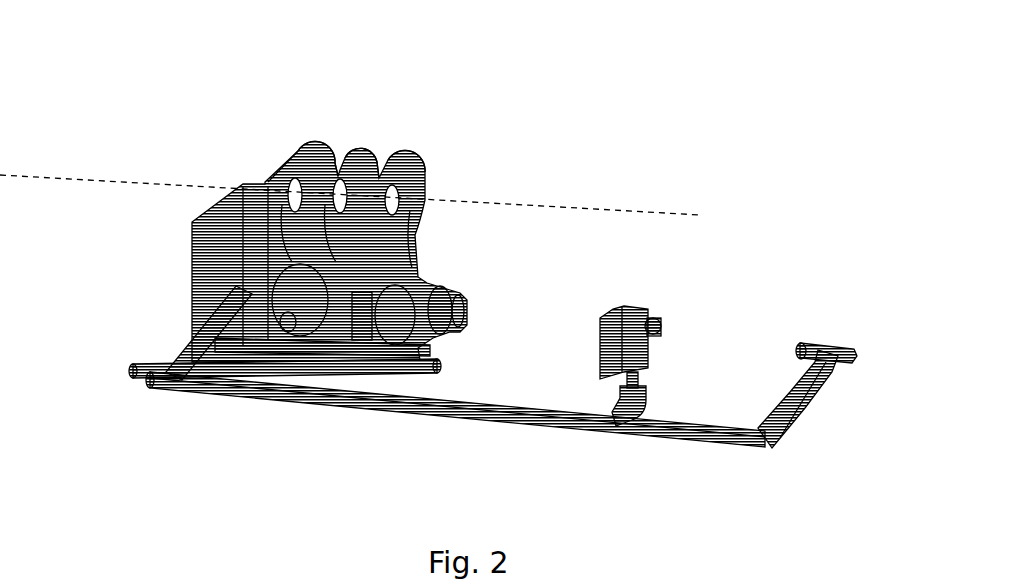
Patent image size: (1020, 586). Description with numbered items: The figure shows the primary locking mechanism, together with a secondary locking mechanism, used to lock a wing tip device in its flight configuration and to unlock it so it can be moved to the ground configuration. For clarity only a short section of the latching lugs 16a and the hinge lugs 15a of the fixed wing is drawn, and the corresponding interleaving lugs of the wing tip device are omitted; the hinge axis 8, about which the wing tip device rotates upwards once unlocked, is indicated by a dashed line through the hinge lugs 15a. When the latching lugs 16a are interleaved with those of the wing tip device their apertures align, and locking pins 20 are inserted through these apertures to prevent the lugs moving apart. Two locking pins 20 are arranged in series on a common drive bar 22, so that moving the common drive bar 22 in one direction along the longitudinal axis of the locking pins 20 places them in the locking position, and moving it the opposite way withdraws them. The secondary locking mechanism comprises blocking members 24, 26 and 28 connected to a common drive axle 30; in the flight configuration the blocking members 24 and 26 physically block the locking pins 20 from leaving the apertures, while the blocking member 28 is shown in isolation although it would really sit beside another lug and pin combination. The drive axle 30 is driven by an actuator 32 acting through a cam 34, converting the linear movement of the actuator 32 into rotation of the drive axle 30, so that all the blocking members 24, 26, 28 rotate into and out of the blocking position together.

The hinge axis 8 is at (160, 183).
The hinge lugs 15a is at (277, 182).
The latching lugs 16a is at (313, 273).
The locking pins 20 is at (462, 293).
The common drive bar 22 is at (322, 350).
The blocking member 24 is at (168, 382).
The blocking member 26 is at (365, 300).
The blocking member 28 is at (832, 348).
The common drive axle 30 is at (530, 417).
The actuator 32 is at (638, 310).
The cam 34 is at (633, 418).